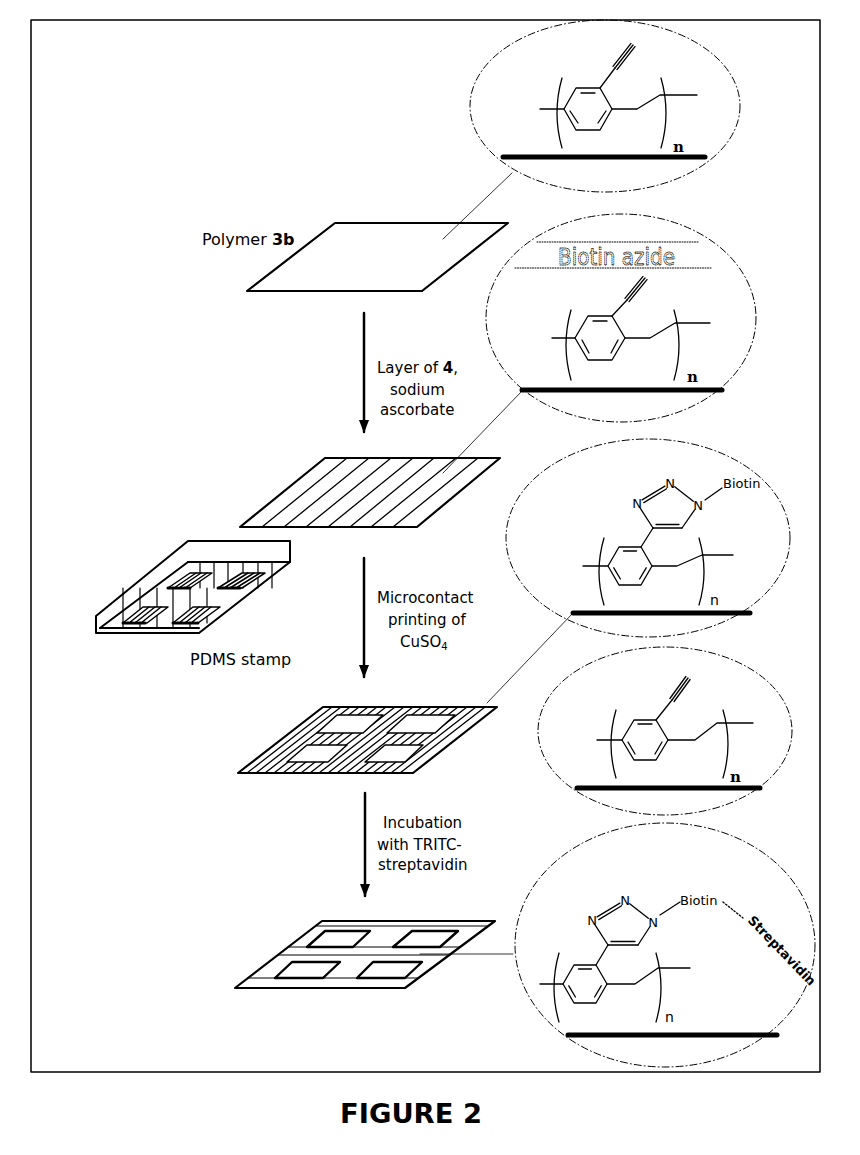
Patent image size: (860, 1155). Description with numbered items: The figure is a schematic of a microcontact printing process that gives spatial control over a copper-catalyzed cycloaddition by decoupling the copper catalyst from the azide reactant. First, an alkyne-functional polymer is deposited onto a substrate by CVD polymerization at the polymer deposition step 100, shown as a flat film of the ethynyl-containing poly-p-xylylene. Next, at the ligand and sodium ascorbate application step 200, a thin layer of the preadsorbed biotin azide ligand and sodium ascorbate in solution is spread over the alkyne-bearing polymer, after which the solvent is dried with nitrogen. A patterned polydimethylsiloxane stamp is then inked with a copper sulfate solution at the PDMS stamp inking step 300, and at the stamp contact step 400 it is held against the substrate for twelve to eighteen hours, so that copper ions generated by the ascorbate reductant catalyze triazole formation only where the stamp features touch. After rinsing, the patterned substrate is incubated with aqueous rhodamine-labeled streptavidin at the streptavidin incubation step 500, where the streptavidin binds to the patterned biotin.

The polymer deposition step 100 is at (238, 278).
The ligand and sodium ascorbate application step 200 is at (288, 481).
The PDMS stamp inking step 300 is at (147, 648).
The stamp contact step 400 is at (352, 636).
The streptavidin incubation step 500 is at (352, 844).